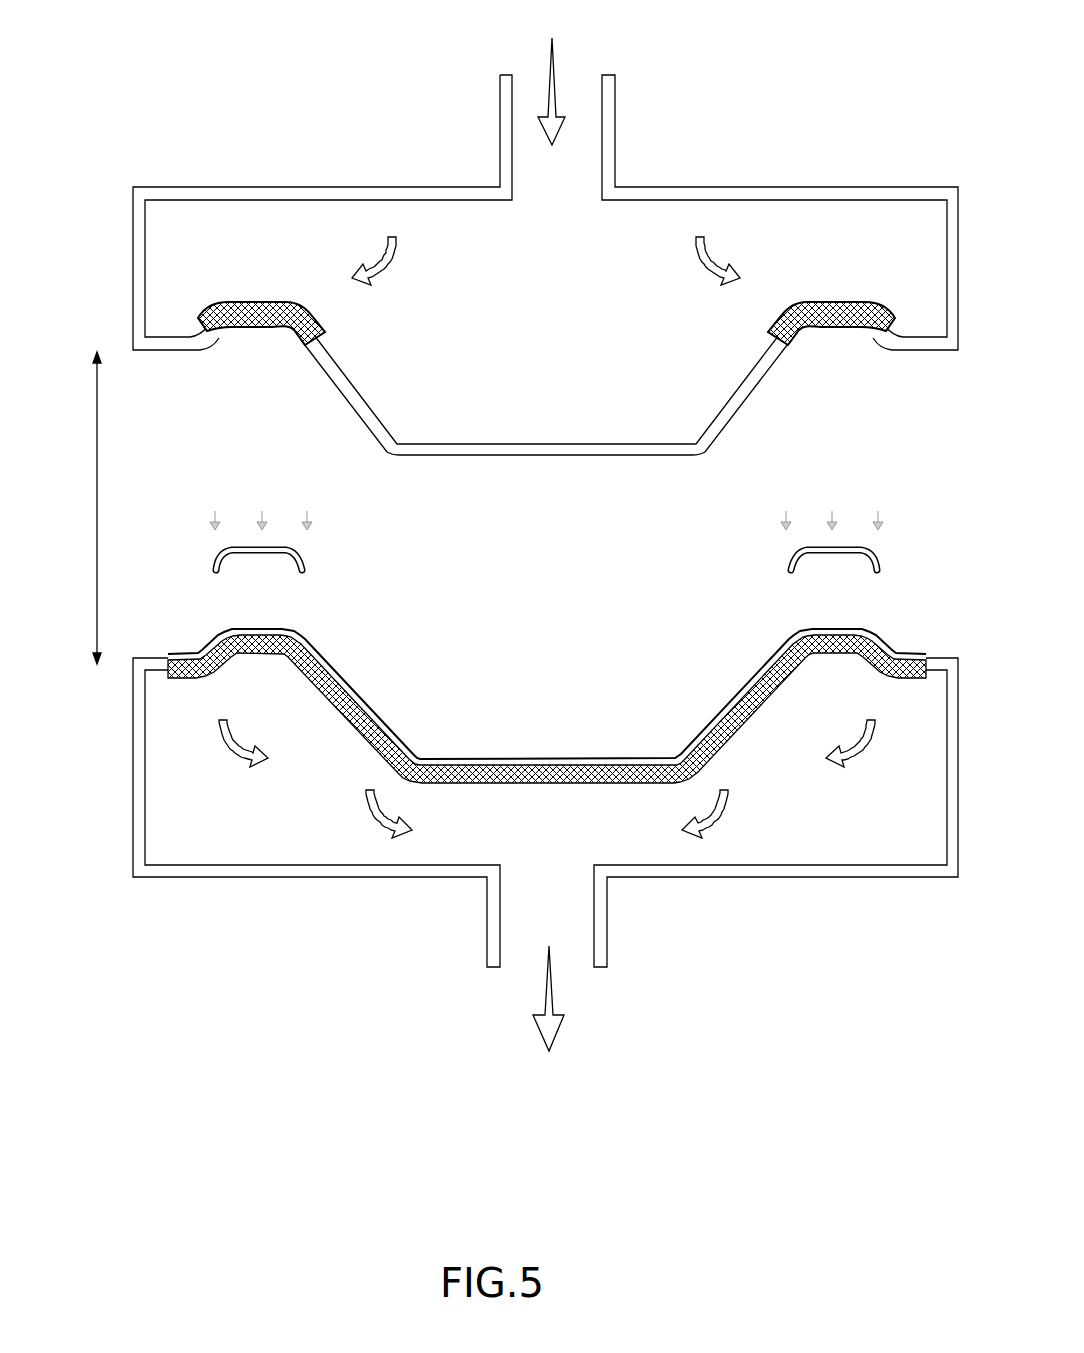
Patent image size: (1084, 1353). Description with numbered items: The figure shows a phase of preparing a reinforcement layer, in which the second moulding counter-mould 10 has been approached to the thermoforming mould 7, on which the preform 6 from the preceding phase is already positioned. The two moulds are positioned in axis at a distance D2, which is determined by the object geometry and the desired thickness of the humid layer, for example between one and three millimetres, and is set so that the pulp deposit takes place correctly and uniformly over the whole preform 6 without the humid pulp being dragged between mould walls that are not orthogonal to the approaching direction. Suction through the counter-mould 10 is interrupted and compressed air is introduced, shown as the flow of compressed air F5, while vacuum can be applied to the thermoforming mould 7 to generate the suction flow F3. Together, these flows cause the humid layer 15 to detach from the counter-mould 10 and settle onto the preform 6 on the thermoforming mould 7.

The second moulding counter-mould 10 is at (248, 187).
The thermoforming mould 7 is at (133, 790).
The preform 6 is at (470, 755).
The humid layer 15 is at (793, 565).
The flow of compressed air F5 is at (556, 118).
The suction flow F3 is at (555, 1027).
The distance D2 is at (72, 508).